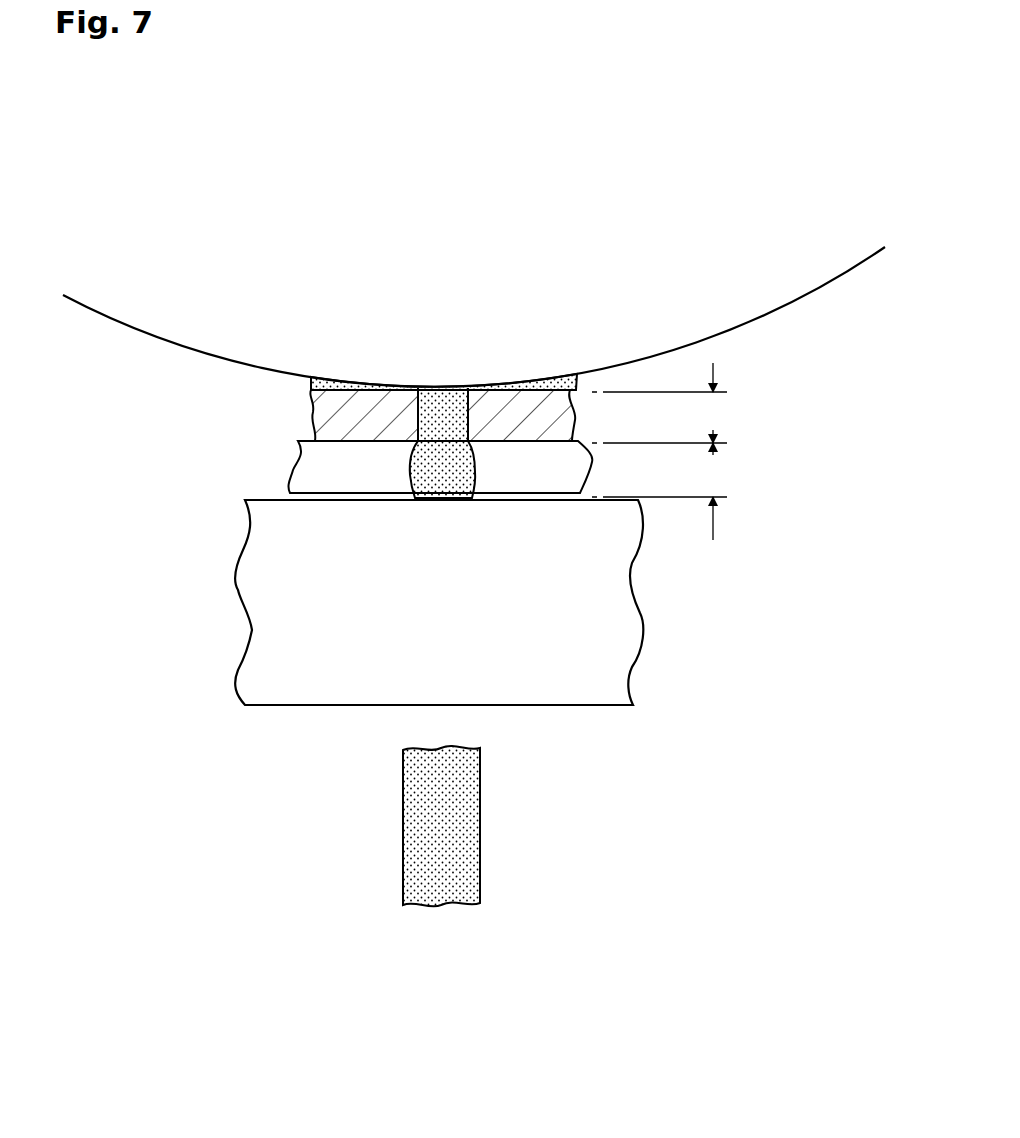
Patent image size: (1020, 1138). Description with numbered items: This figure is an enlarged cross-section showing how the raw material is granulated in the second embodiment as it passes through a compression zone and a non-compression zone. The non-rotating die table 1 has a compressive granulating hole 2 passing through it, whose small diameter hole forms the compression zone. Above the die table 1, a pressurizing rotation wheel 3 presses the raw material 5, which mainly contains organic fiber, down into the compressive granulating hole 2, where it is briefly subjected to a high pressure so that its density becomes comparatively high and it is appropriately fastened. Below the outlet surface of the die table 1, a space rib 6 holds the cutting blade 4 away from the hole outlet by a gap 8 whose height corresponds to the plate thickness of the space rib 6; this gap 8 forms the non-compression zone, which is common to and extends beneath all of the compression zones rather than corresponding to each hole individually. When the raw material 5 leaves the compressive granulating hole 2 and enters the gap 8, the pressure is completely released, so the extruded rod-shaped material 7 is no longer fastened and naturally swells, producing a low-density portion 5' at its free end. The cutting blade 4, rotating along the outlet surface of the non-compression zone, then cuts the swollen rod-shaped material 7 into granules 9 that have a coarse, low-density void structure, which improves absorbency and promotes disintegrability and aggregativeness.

The die table 1 is at (316, 411).
The compressive granulating hole 2 is at (469, 413).
The pressurizing rotation wheel 3 is at (750, 298).
The cutting blade 4 is at (257, 592).
The raw material 5 is at (443, 367).
The low-density portion 5' is at (443, 507).
The space rib 6 is at (557, 472).
The rod-shaped material 7 is at (423, 455).
The gap 8 is at (670, 451).
The granule 9 is at (468, 872).